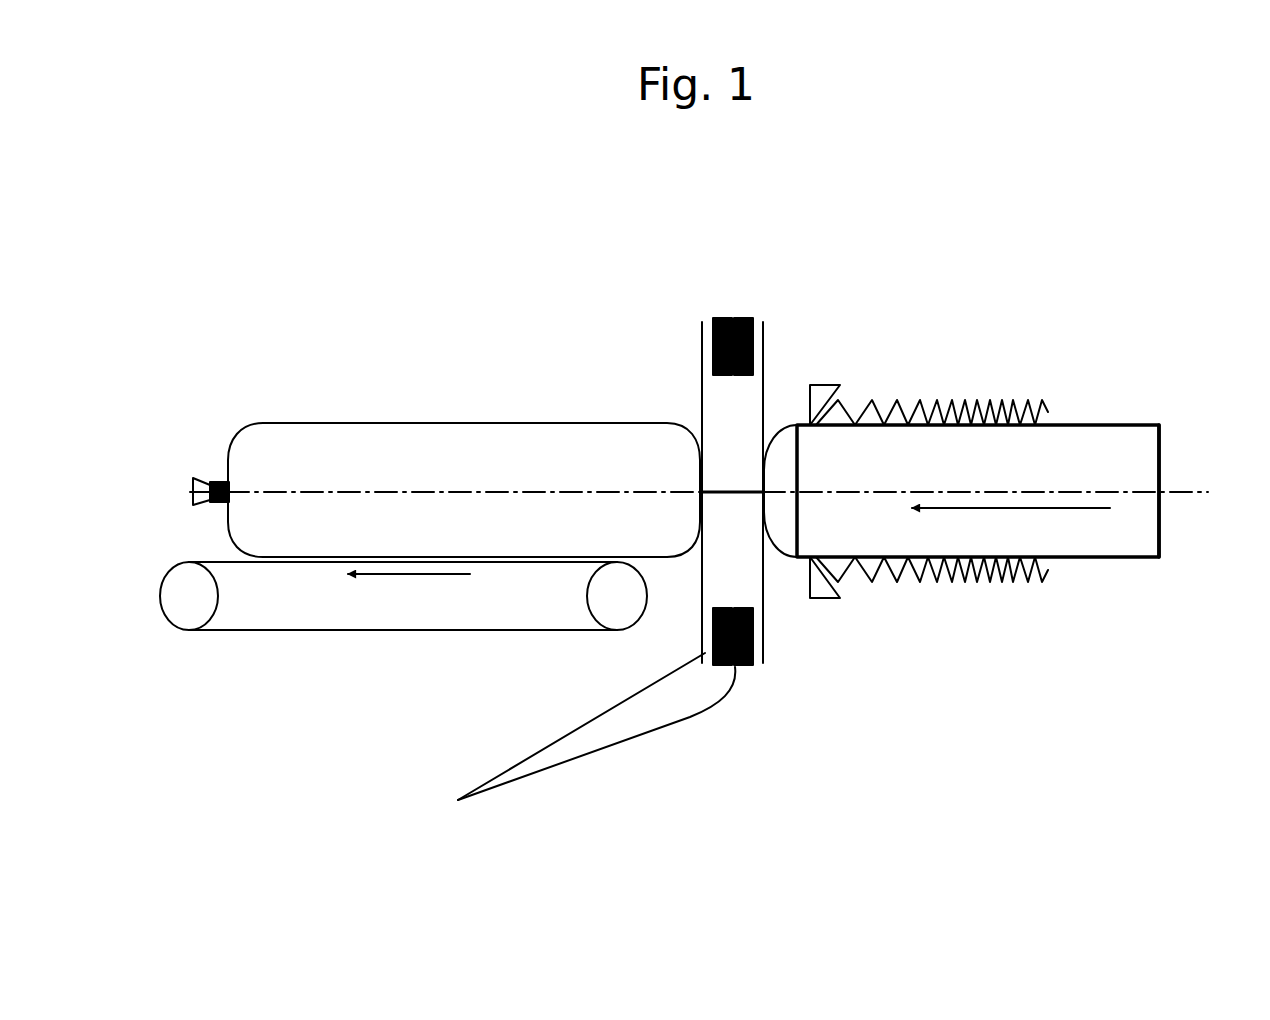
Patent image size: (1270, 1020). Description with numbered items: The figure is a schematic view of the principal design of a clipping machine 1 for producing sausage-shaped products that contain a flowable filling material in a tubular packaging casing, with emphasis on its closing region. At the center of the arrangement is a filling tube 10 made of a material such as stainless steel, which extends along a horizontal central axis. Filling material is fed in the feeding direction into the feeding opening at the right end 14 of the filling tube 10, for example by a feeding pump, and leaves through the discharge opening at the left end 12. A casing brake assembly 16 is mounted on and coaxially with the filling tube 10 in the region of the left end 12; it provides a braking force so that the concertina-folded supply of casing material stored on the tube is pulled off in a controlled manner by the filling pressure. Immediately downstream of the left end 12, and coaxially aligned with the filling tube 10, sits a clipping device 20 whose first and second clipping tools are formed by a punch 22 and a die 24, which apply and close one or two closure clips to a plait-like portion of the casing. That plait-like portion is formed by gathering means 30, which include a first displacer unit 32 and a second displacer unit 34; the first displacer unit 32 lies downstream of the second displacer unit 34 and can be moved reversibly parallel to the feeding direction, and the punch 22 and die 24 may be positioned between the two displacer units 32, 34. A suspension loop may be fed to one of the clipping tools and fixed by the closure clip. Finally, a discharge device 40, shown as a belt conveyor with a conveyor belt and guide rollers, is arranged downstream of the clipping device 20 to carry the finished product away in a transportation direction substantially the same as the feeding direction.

The clipping machine 1 is at (904, 262).
The filling tube 10 is at (1013, 445).
The left end of the filling tube 12 is at (802, 520).
The right end of the filling tube 14 is at (1162, 453).
The casing brake assembly 16 is at (840, 385).
The clipping device 20 is at (693, 487).
The punch 22 is at (752, 347).
The die 24 is at (712, 638).
The gathering means 30 is at (857, 707).
The first displacer unit 32 is at (763, 577).
The second displacer unit 34 is at (703, 553).
The discharge device 40 is at (427, 644).